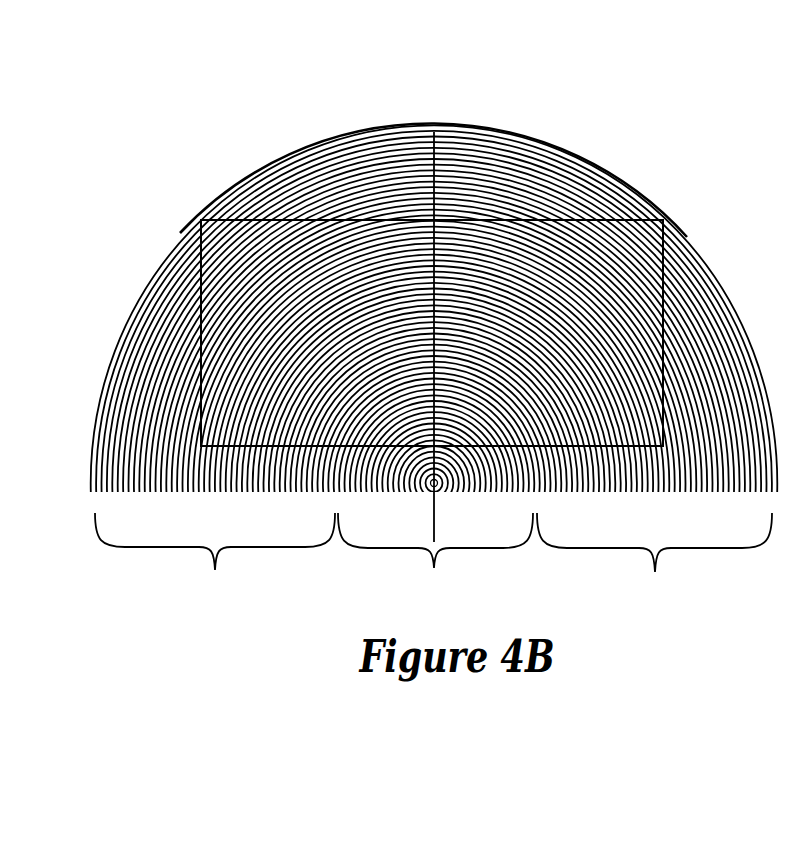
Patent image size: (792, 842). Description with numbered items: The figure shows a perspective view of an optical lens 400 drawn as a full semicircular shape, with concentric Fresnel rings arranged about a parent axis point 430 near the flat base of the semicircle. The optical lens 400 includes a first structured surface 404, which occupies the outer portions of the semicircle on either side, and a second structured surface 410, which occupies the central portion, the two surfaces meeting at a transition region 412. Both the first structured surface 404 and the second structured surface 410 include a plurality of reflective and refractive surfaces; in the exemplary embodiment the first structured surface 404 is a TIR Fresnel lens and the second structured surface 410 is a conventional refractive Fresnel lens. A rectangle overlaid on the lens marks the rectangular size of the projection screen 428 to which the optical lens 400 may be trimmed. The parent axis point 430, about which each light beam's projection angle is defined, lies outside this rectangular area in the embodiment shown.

The optical lens 400 is at (350, 84).
The first structured surface 404 is at (433, 557).
The second structured surface 410 is at (435, 366).
The transition region 412 is at (534, 490).
The projection screen 428 is at (613, 220).
The parent axis point 430 is at (431, 490).